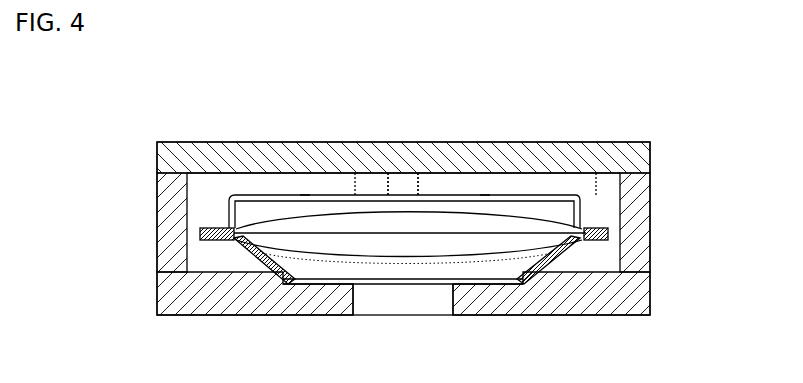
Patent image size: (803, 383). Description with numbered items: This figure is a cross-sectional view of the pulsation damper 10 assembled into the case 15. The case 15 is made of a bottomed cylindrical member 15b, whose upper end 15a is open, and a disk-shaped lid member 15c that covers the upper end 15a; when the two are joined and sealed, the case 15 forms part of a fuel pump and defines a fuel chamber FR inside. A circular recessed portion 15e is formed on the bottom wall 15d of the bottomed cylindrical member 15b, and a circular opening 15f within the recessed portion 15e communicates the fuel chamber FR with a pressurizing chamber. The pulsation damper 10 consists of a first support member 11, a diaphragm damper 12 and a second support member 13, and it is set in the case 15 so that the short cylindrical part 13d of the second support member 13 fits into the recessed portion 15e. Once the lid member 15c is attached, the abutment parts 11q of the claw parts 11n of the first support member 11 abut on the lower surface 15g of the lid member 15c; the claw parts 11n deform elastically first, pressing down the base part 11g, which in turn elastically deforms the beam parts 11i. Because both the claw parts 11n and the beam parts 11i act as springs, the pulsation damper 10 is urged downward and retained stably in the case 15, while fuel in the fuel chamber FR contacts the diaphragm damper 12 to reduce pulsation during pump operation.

The pulsation damper 10 is at (606, 216).
The first support member 11 is at (230, 222).
The base part 11g is at (356, 173).
The beam parts 11i is at (305, 192).
The claw parts 11n is at (405, 184).
The abutment part 11q is at (405, 184).
The diaphragm damper 12 is at (528, 214).
The second support member 13 is at (228, 241).
The short cylindrical part 13d is at (284, 283).
The case 15 is at (652, 141).
The upper end 15a is at (189, 168).
The bottomed cylindrical member 15b is at (629, 244).
The lid member 15c is at (267, 160).
The bottom wall 15d is at (568, 298).
The recessed portion 15e is at (517, 286).
The opening 15f is at (357, 293).
The lower surface 15g is at (512, 176).
The fuel chamber FR is at (597, 173).